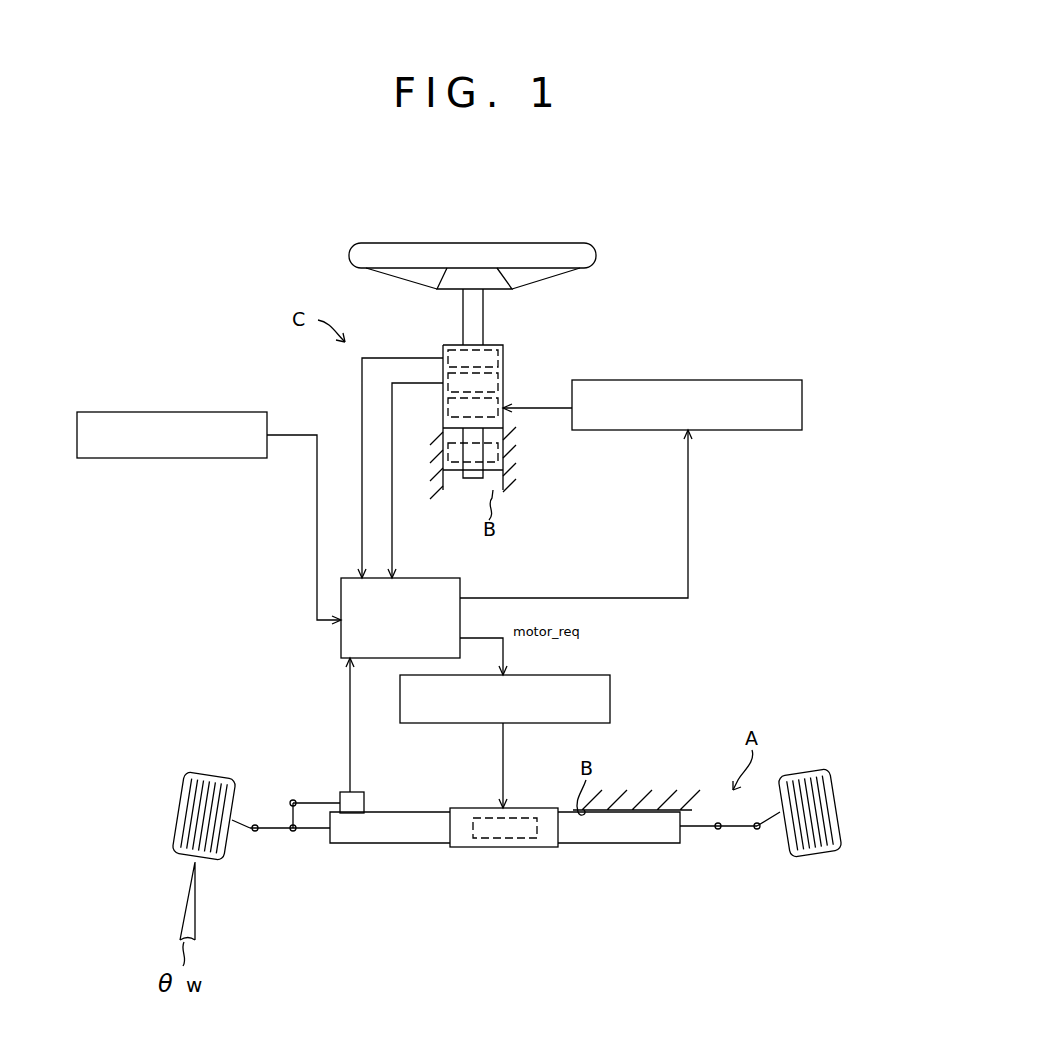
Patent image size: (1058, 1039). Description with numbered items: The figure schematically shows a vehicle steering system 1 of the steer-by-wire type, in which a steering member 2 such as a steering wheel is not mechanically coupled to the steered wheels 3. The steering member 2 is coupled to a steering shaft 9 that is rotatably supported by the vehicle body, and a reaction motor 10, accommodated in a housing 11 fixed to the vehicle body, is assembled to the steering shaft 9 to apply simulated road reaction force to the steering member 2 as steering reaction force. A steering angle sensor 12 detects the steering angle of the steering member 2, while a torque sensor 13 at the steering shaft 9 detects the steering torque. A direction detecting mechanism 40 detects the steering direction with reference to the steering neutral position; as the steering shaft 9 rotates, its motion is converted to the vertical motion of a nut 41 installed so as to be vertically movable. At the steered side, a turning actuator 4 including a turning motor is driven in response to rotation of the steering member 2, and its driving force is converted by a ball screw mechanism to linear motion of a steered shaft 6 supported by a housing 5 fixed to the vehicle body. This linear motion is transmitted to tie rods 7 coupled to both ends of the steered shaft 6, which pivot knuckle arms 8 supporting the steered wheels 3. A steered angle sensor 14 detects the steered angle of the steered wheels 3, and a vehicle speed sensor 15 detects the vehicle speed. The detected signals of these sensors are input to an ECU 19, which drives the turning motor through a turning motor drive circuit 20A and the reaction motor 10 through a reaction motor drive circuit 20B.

The vehicle steering system 1 is at (640, 320).
The steering member 2 is at (545, 243).
The steered wheels 3 is at (205, 862).
The turning actuator 4 is at (503, 847).
The housing 5 is at (420, 845).
The steered shaft 6 is at (312, 832).
The tie rods 7 is at (272, 832).
The knuckle arms 8 is at (250, 822).
The steering shaft 9 is at (485, 302).
The reaction motor 10 is at (443, 407).
The housing 11 is at (502, 346).
The steering angle sensor 12 is at (503, 383).
The torque sensor 13 is at (503, 358).
The steered angle sensor 14 is at (340, 794).
The vehicle speed sensor 15 is at (195, 411).
The ECU 19 is at (440, 577).
The turning motor drive circuit 20A is at (610, 698).
The reaction motor drive circuit 20B is at (803, 404).
The direction detecting mechanism 40 is at (503, 442).
The nut 41 is at (443, 465).